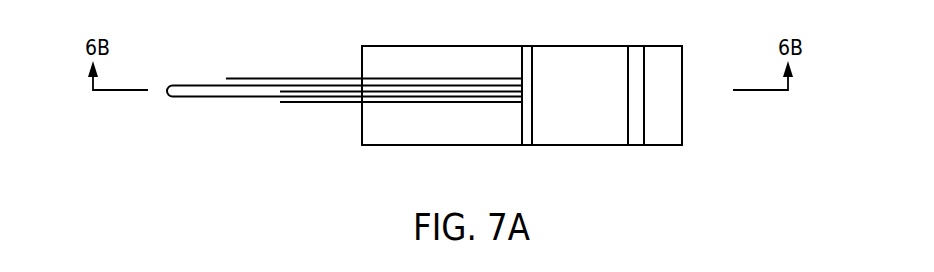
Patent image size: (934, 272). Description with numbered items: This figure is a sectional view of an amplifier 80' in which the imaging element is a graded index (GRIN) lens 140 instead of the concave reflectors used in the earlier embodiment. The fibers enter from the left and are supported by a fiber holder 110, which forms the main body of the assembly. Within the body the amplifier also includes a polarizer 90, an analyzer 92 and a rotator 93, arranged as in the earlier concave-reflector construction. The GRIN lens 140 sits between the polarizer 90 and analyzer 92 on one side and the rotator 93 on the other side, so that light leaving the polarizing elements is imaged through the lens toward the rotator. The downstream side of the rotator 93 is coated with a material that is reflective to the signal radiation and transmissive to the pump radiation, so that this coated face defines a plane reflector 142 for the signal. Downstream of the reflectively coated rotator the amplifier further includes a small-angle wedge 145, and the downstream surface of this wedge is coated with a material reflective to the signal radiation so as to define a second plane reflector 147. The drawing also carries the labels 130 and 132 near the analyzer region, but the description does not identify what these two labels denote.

The amplifier 80' is at (344, 149).
The fiber holder 110 is at (452, 146).
The polarizer 90 is at (527, 46).
The analyzer 92 is at (528, 146).
The rotator 93 is at (637, 146).
The front face of flange 130 is at (521, 60).
The fiber bore 132 is at (532, 70).
The GRIN lens 140 is at (586, 46).
The plane reflector 142 is at (645, 53).
The small-angle wedge 145 is at (670, 146).
The plane reflector 147 is at (682, 72).